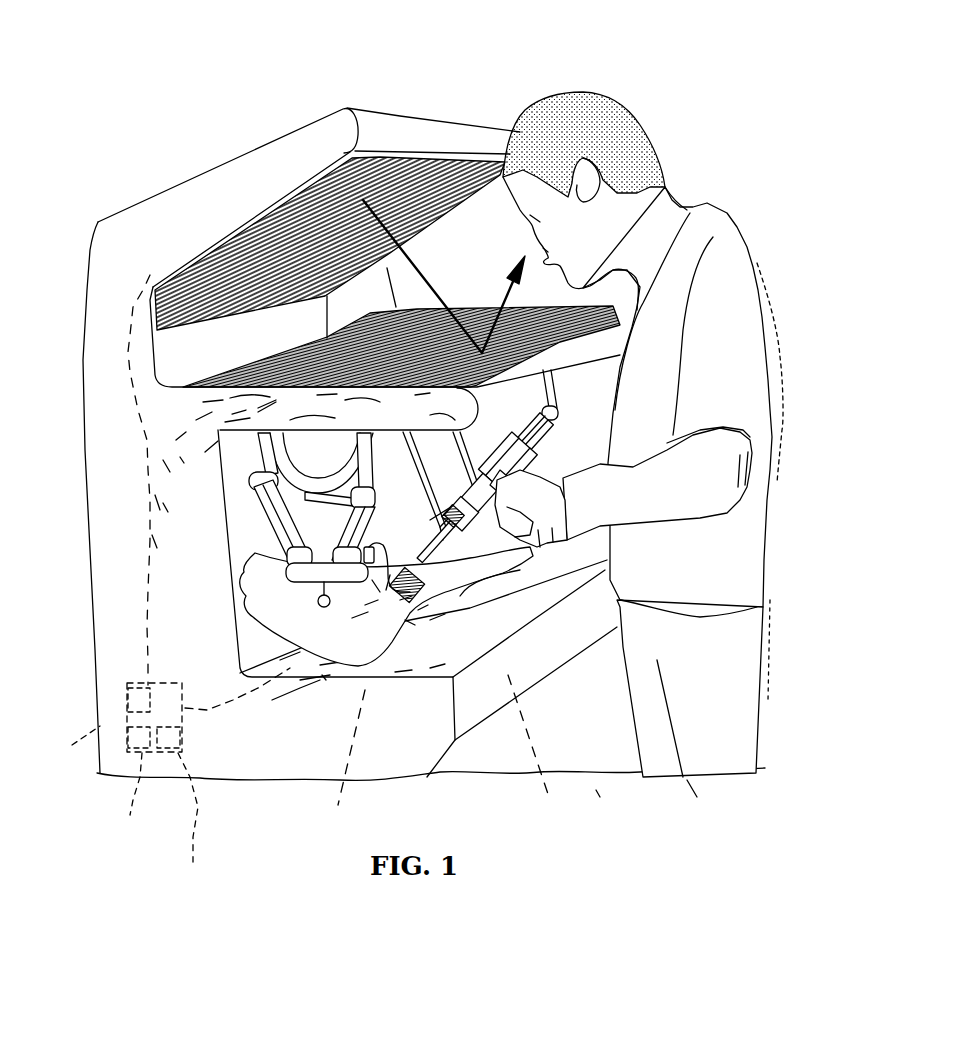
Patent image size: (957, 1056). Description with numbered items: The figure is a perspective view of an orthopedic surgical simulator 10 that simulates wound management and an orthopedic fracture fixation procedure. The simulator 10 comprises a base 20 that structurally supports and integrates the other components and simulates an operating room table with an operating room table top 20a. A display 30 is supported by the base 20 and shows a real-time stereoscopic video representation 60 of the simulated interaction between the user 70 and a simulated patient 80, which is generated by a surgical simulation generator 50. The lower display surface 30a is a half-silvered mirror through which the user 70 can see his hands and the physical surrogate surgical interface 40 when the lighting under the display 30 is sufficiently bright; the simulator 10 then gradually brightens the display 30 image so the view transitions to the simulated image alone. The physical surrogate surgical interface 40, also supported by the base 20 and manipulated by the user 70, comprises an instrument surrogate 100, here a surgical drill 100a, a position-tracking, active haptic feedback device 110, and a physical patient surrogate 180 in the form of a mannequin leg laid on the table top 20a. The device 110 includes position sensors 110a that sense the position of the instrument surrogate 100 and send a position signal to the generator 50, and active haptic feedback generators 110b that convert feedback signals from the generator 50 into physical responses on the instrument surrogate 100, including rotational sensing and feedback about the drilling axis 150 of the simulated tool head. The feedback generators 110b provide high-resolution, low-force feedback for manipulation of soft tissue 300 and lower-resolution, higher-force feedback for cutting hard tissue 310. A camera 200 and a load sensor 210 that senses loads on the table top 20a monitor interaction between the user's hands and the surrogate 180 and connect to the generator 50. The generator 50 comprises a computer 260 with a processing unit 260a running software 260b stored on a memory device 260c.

The orthopedic surgical simulator 10 is at (186, 96).
The base 20 is at (447, 758).
The operating room table top 20a is at (430, 662).
The display 30 is at (470, 307).
The lower display surface 30a is at (490, 300).
The physical surrogate surgical interface 40 is at (322, 675).
The surgical simulation generator 50 is at (73, 746).
The stereoscopic video representation 60 is at (413, 326).
The user 70 is at (683, 207).
The simulated patient 80 is at (407, 370).
The instrument surrogate 100 is at (506, 488).
The drill 100a is at (552, 446).
The position-tracking, active haptic feedback device 110 is at (297, 525).
The position sensors 110a is at (262, 496).
The active haptic feedback generators 110b is at (247, 534).
The rotational axis 150 is at (563, 389).
The physical patient surrogate 180 is at (432, 620).
The camera 200 is at (340, 409).
The load sensor 210 is at (342, 767).
The computer 260 is at (163, 589).
The processing unit 260a is at (141, 787).
The software/program 260b is at (188, 815).
The memory device 260c is at (127, 691).
The soft tissue 300 is at (600, 797).
The hard tissue 310 is at (541, 760).